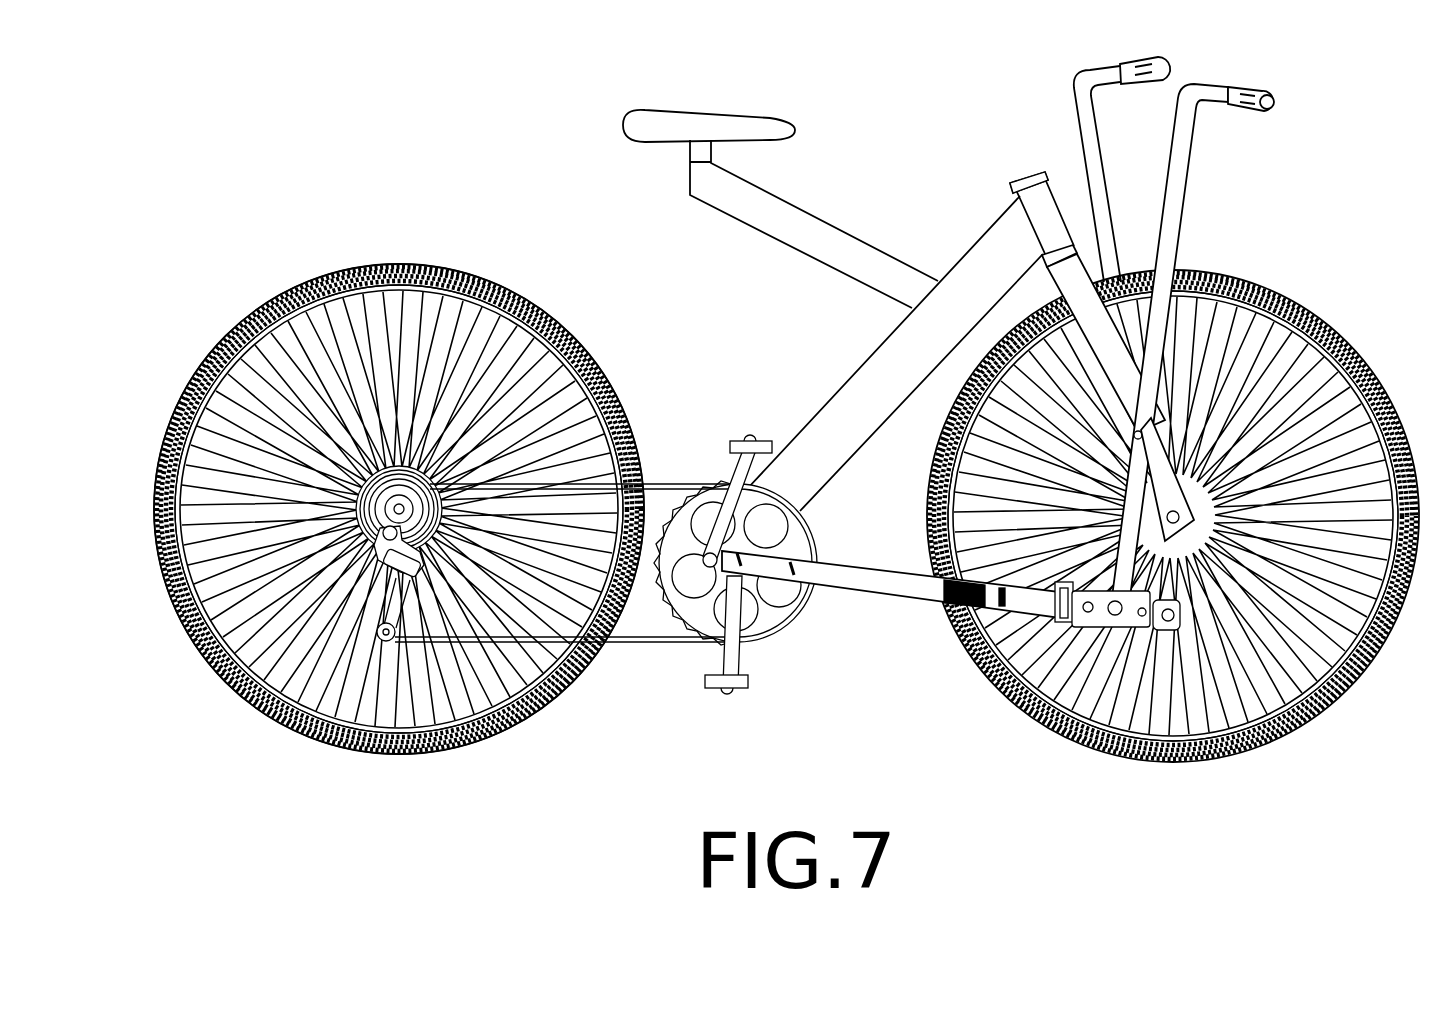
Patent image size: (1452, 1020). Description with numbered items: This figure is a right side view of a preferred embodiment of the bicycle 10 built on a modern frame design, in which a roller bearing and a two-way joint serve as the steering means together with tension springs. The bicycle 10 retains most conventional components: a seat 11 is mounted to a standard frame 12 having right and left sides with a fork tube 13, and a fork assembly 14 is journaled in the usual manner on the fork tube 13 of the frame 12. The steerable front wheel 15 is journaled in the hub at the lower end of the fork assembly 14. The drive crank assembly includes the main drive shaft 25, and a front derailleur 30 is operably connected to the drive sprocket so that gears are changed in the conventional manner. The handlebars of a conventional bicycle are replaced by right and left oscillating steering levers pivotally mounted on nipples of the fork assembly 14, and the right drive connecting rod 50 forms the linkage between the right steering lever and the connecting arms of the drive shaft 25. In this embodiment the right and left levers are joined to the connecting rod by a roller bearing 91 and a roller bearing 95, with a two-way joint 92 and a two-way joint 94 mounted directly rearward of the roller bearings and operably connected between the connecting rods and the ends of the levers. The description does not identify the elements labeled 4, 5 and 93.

The front wheel 4 is at (1218, 272).
The pedal 5 is at (722, 437).
The bicycle 10 is at (1183, 187).
The seat 11 is at (573, 690).
The frame 12 is at (687, 630).
The fork tube 13 is at (1054, 200).
The fork assembly 14 is at (594, 367).
The steerable front wheel 15 is at (1247, 297).
The main drive shaft 25 is at (1138, 620).
The front derailleur 30 is at (907, 600).
The right drive connecting rod 50 is at (972, 625).
The roller bearing 91 is at (1075, 700).
The two-way joint 92 is at (1037, 687).
The chain guard 93 is at (760, 613).
The two-way joint 94 is at (987, 668).
The roller bearing 95 is at (1165, 632).